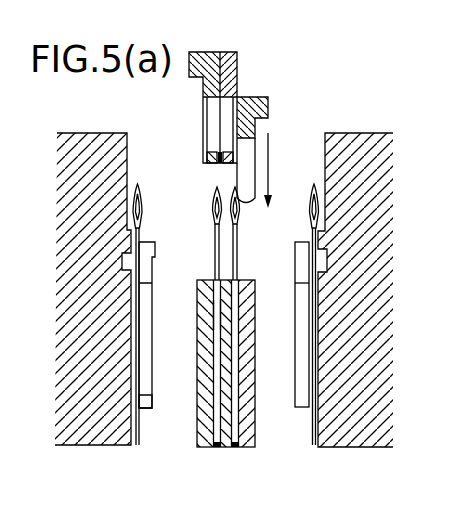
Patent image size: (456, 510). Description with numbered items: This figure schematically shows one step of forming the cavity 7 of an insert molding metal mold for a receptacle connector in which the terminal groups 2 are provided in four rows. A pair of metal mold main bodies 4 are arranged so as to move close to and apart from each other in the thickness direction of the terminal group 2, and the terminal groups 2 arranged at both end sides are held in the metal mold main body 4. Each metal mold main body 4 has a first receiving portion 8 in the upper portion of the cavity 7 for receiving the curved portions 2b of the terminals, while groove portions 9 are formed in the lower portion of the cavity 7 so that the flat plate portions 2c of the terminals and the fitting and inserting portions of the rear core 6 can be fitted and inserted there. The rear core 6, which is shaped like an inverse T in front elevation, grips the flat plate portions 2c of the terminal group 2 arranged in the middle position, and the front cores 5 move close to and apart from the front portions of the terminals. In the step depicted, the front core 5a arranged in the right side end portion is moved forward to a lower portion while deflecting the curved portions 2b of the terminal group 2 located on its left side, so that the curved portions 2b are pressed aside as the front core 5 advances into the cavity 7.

The terminal group 2 is at (335, 299).
The curved portion 2b is at (236, 218).
The flat plate portion 2c is at (303, 313).
The metal mold main body 4 is at (55, 190).
The front core 5 is at (261, 40).
The front core 5a is at (268, 105).
The rear core 6 is at (239, 457).
The cavity 7 is at (153, 257).
The first receiving portion 8 is at (133, 177).
The groove portion 9 is at (148, 372).